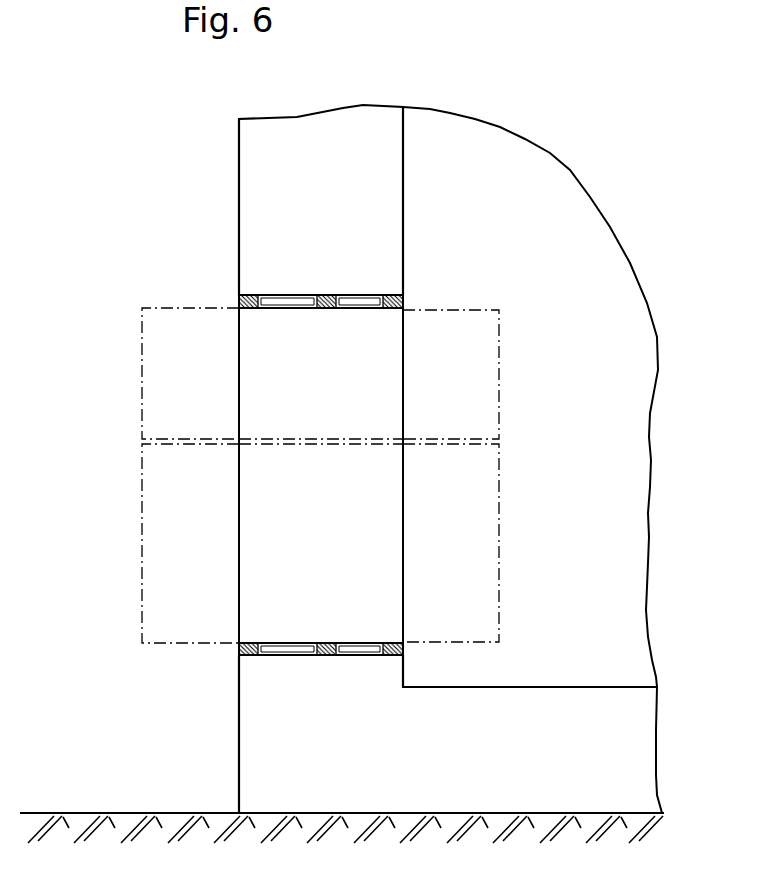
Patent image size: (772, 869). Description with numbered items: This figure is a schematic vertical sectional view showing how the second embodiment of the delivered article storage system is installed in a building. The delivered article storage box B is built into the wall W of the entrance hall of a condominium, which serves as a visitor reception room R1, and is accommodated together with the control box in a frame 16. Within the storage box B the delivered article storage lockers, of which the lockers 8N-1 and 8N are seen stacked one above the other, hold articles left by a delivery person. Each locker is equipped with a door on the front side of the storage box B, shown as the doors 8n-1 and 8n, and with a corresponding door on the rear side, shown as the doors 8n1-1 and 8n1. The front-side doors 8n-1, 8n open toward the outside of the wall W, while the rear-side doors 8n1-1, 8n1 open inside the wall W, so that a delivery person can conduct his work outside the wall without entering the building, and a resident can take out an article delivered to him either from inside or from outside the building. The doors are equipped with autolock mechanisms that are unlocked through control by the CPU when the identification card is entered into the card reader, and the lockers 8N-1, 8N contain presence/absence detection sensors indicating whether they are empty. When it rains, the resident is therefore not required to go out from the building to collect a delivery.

The wall W is at (254, 197).
The visitor reception room R1 is at (491, 171).
The delivered article storage box B is at (366, 306).
The frame 16 is at (236, 651).
The door 8n-1 is at (153, 367).
The door 8n is at (148, 538).
The rear-side door 8n1-1 is at (490, 368).
The rear-side door 8n1 is at (487, 525).
The delivered article storage locker 8N-1 is at (393, 350).
The delivered article storage locker 8N is at (394, 607).